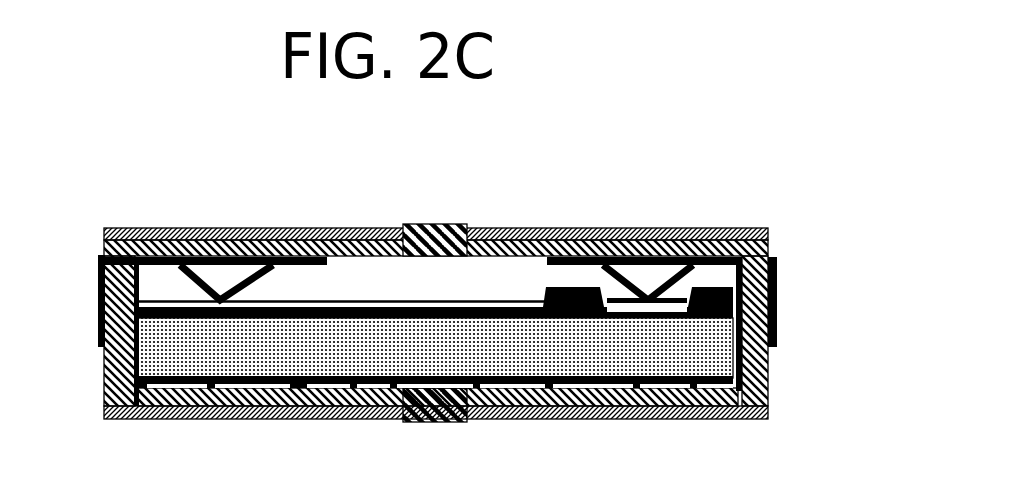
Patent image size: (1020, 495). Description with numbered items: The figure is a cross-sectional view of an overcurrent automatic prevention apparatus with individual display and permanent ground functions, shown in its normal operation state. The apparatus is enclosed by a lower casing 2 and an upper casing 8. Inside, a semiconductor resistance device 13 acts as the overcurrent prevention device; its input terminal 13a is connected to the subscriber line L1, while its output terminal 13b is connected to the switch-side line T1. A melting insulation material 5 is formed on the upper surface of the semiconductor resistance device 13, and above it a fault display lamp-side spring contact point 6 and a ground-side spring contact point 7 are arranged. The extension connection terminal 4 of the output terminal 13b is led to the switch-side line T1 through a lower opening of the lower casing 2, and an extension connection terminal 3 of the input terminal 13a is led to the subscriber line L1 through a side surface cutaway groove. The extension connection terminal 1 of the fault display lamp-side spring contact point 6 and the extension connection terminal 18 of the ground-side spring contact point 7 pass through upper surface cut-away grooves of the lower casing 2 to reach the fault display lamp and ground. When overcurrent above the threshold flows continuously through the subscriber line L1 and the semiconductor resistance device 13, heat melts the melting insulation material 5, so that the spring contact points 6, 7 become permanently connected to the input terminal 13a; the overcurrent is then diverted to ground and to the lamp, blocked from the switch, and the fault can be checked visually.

The extension connection terminal 1 is at (98, 290).
The lower casing 2 is at (770, 375).
The extension connection terminal 3 is at (717, 284).
The extension connection terminal 4 is at (218, 419).
The melting insulation material 5 is at (355, 301).
The fault display lamp-side spring contact point 6 is at (220, 300).
The ground-side spring contact point 7 is at (648, 300).
The upper casing 8 is at (433, 224).
The semiconductor resistance device 13 is at (513, 355).
The input terminal 13a is at (653, 320).
The output terminal 13b is at (357, 388).
The extension connection terminal 18 is at (777, 300).
The switch-side line T1 is at (283, 228).
The subscriber line L1 is at (530, 228).